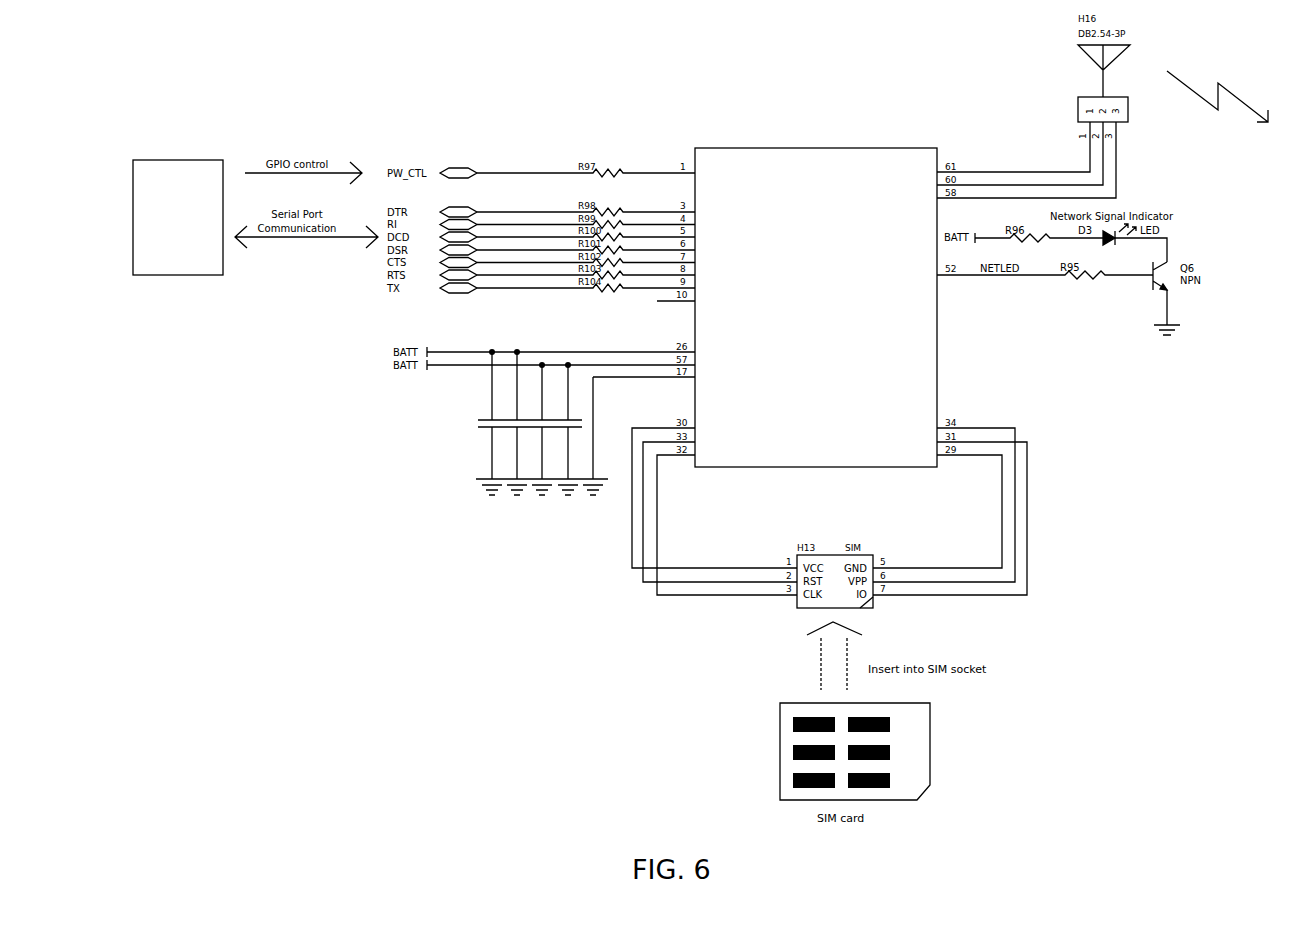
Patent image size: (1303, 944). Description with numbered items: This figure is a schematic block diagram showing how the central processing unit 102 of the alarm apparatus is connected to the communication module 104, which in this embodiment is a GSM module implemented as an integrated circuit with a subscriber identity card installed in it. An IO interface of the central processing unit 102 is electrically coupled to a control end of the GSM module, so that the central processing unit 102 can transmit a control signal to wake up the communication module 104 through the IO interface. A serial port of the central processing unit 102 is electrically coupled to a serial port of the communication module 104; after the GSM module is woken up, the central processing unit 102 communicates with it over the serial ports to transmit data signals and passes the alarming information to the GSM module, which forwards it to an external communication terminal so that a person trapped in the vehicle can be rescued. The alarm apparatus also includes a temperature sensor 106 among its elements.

The central processing unit 102 is at (208, 160).
The communication module 104 is at (840, 148).
The temperature sensor 106 is at (542, 422).